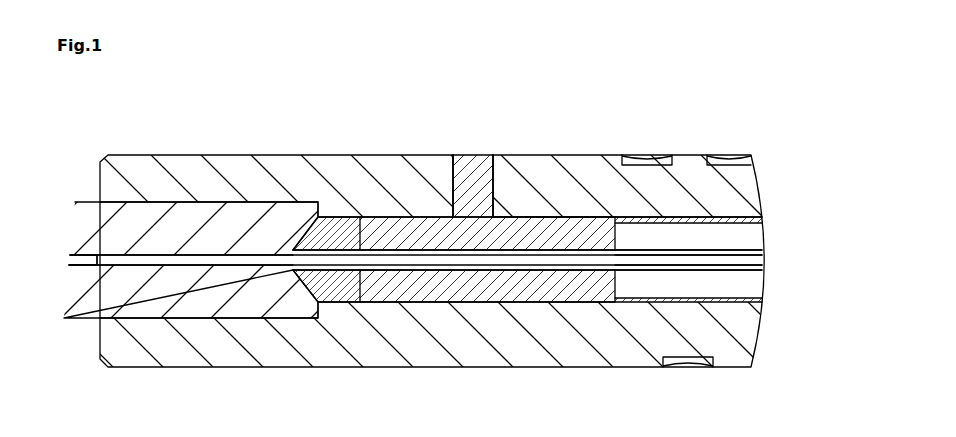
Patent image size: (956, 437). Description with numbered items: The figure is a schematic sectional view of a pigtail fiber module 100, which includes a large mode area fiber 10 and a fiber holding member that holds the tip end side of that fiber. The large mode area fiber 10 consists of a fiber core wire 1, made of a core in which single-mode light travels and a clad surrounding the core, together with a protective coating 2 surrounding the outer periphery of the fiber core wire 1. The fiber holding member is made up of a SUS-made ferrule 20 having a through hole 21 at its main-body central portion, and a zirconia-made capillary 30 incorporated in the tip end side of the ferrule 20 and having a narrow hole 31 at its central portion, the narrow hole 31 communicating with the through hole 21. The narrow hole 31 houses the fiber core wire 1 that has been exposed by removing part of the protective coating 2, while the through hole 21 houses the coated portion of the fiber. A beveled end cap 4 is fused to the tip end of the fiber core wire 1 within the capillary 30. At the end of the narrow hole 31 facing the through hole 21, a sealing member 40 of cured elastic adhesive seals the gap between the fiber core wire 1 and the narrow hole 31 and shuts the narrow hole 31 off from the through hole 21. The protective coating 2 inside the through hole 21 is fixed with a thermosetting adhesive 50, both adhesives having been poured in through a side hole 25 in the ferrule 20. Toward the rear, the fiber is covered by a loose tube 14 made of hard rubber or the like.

The pigtail fiber module 100 is at (430, 258).
The ferrule 20 is at (563, 155).
The through hole 21 is at (587, 217).
The side hole 25 is at (453, 178).
The capillary 30 is at (277, 312).
The narrow hole 31 is at (166, 267).
The sealing member 40 is at (334, 230).
The thermosetting adhesive 50 is at (517, 290).
The loose tube 14 is at (752, 240).
The large mode area fiber 10 is at (765, 268).
The fiber core wire 1 is at (205, 263).
The protective coating 2 is at (763, 253).
The beveled end cap 4 is at (66, 297).